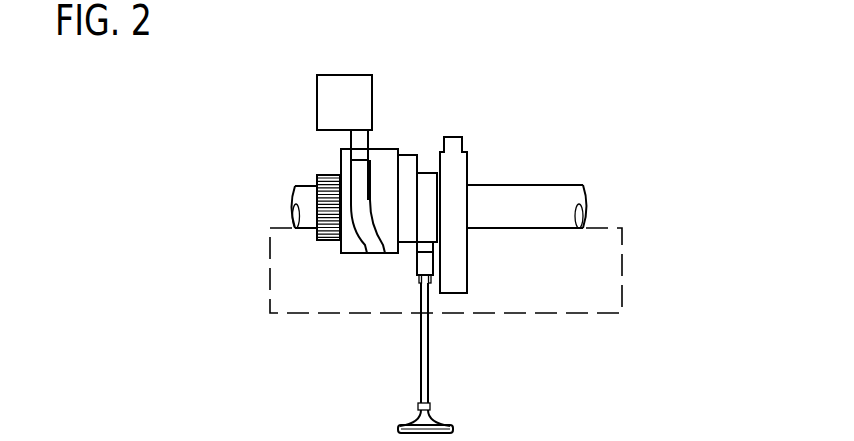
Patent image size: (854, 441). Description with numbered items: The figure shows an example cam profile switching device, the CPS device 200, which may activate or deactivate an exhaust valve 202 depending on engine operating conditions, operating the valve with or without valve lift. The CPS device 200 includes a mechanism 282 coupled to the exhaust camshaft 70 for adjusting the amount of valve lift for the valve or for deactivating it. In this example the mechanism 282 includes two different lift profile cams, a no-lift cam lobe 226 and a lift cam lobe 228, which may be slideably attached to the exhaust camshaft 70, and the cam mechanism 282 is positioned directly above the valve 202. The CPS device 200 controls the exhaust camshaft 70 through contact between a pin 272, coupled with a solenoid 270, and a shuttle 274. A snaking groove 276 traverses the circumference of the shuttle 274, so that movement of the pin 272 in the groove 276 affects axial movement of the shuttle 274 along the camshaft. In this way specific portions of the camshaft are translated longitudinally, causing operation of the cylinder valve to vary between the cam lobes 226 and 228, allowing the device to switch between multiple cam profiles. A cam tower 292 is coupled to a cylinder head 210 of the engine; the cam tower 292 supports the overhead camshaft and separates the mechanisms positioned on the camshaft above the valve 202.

The CPS device 200 is at (455, 46).
The solenoid 270 is at (358, 75).
The pin 272 is at (349, 136).
The shuttle 274 is at (382, 148).
The snaking groove 276 is at (380, 254).
The mechanism 282 is at (432, 225).
The no-lift cam lobe 226 is at (422, 172).
The lift cam lobe 228 is at (410, 243).
The cam tower 292 is at (450, 157).
The exhaust camshaft 70 is at (545, 185).
The cylinder head 210 is at (622, 258).
The exhaust valve 202 is at (420, 328).